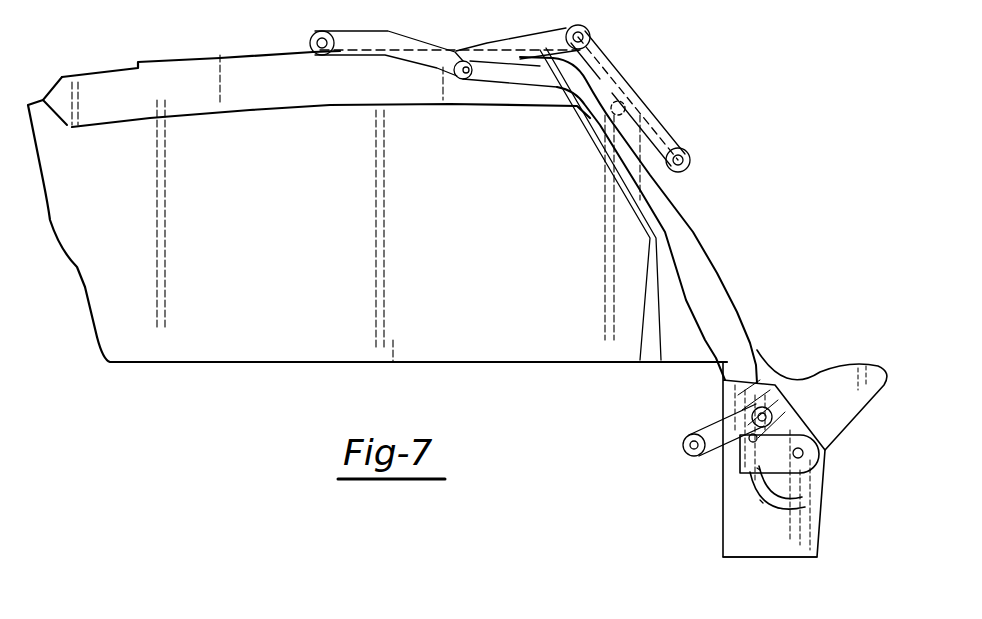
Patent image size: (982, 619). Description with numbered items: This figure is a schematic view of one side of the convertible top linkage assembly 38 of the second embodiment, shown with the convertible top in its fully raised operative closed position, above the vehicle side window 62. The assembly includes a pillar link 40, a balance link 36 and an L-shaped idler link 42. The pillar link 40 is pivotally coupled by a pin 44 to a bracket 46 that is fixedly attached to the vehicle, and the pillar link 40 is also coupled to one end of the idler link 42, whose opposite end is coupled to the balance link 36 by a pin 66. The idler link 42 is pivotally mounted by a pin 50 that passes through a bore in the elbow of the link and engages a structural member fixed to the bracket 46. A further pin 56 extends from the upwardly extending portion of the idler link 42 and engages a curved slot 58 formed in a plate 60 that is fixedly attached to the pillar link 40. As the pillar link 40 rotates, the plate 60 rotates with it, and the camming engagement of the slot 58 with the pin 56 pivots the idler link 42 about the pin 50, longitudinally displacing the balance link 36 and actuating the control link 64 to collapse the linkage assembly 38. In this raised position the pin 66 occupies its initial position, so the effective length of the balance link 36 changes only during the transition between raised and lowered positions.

The balance link 36 is at (714, 277).
The linkage assembly 38 is at (728, 114).
The pillar link 40 is at (772, 370).
The idler link 42 is at (725, 455).
The pin 44 is at (804, 456).
The bracket 46 is at (784, 547).
The pin 50 is at (728, 484).
The pin 56 is at (800, 393).
The curved slot 58 is at (763, 502).
The plate 60 is at (806, 496).
The vehicle side window 62 is at (483, 251).
The control link 64 is at (603, 88).
The pin 66 is at (686, 440).